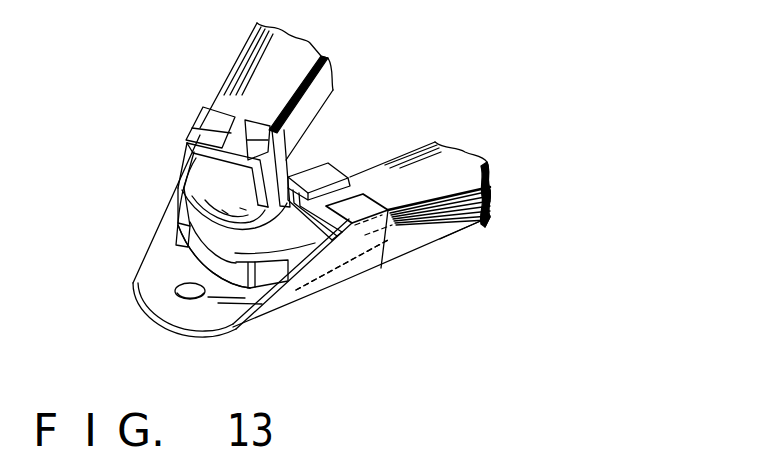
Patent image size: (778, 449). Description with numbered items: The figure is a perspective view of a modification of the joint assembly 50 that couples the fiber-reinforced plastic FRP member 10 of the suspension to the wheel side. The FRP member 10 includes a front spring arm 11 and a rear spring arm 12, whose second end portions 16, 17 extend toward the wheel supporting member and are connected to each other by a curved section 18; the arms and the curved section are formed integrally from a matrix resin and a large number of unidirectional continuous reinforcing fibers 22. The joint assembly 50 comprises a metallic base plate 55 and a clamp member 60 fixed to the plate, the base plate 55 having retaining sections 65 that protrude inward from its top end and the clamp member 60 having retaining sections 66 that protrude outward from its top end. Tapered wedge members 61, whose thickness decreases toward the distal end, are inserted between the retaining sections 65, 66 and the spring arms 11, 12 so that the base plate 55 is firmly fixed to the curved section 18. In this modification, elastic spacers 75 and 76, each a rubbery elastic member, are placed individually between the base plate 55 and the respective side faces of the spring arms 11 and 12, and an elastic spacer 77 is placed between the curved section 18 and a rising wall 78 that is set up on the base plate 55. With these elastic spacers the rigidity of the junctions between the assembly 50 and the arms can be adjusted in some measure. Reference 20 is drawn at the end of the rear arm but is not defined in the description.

The FRP member 10 is at (496, 236).
The front spring arm 11 is at (246, 57).
The rear spring arm 12 is at (422, 146).
The second end portion 16 is at (236, 100).
The second end portion 17 is at (420, 213).
The curved section 18 is at (207, 213).
The end of second rod 20 is at (495, 185).
The reinforcing fibers 22 is at (488, 218).
The joint assembly 50 is at (341, 301).
The base plate 55 is at (253, 328).
The clamp member 60 is at (307, 163).
The wedge member 61 is at (188, 163).
The retaining section 65 is at (203, 125).
The retaining section 66 is at (268, 123).
The elastic spacer 75 is at (180, 158).
The elastic spacer 76 is at (383, 270).
The elastic spacer 77 is at (193, 263).
The rising wall 78 is at (193, 267).